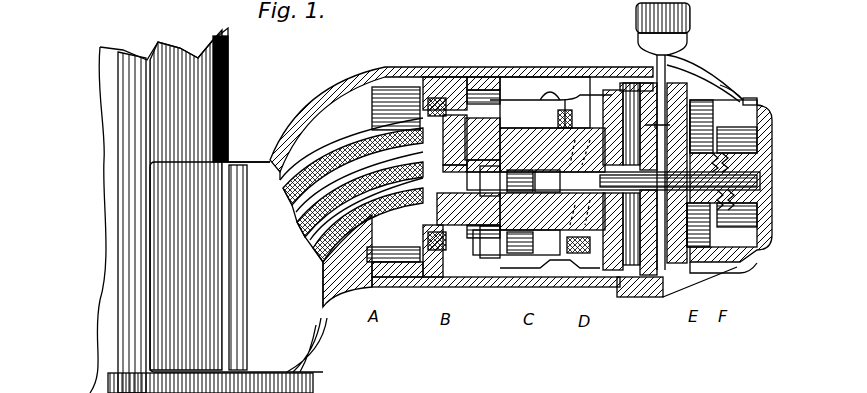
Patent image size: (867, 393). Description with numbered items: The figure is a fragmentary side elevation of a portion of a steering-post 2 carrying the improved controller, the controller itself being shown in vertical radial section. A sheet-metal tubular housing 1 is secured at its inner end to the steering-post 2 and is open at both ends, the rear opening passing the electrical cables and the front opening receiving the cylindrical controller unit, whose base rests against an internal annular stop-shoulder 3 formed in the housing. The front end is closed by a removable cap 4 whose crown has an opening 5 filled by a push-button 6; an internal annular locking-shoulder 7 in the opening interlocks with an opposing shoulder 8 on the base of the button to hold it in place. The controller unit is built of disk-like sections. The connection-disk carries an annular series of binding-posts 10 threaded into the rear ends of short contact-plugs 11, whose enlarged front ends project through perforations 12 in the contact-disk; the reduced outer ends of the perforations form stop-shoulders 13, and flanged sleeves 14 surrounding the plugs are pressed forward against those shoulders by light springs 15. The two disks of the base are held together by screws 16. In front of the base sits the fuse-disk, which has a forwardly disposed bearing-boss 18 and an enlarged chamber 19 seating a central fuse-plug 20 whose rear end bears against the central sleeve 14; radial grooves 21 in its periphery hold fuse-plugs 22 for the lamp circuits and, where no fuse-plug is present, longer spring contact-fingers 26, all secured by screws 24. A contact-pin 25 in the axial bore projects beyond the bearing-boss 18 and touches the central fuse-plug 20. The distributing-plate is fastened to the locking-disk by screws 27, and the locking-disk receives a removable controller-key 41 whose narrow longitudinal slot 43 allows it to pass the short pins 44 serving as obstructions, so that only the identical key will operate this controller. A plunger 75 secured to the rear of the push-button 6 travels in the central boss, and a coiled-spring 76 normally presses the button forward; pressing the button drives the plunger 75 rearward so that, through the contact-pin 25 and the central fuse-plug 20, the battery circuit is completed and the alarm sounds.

The tubular housing 1 is at (562, 80).
The steering-post 2 is at (228, 100).
The annular stop-shoulder 3 is at (412, 77).
The removable cap 4 is at (732, 96).
The opening 5 is at (757, 104).
The push-button 6 is at (500, 62).
The internal annular locking-shoulder 7 is at (745, 100).
The opposing shoulder 8 is at (722, 266).
The annular series of binding-posts 10 is at (372, 113).
The contact-plugs 11 is at (423, 75).
The perforations 12 is at (447, 280).
The stop-shoulders 13 is at (478, 285).
The sleeves 14 is at (470, 77).
The light spring 15 is at (482, 77).
The screws 16 is at (795, 155).
The bearing-boss 18 is at (614, 90).
The chamber 19 is at (518, 122).
The fuse-plug 20 is at (550, 98).
The radial grooves 21 is at (592, 80).
The fuse-plugs 22 is at (519, 270).
The screws 24 is at (572, 282).
The contact-pin 25 is at (600, 211).
The spring contact-fingers 26 is at (578, 146).
The screws 27 is at (569, 212).
The controller-key 41 is at (690, 18).
The longitudinal slot 43 is at (680, 100).
The short pins 44 is at (668, 65).
The plunger 75 is at (745, 200).
The coiled-spring 76 is at (735, 160).